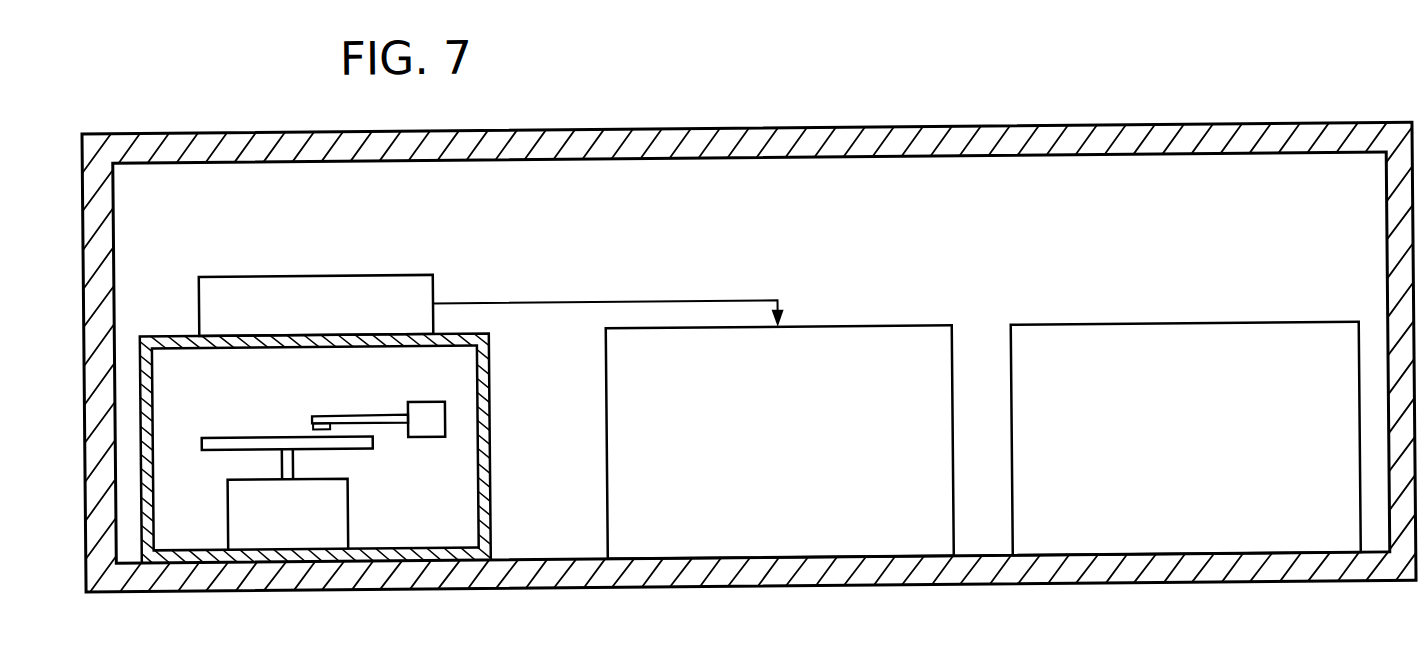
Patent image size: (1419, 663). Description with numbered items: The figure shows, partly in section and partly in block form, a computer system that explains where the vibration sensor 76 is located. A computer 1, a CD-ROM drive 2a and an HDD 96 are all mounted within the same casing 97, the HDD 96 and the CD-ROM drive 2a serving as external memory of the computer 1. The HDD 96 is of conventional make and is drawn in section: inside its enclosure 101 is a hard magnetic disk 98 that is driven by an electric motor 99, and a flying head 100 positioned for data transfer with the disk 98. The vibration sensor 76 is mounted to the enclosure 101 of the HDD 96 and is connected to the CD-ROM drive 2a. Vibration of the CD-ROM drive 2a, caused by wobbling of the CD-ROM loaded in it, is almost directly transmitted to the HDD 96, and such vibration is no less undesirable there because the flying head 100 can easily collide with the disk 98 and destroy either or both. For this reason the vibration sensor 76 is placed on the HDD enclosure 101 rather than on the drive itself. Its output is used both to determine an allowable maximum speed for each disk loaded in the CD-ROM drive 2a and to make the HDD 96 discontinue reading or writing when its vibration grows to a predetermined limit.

The computer 1 is at (1140, 333).
The CD-ROM drive 2a is at (861, 333).
The vibration sensor 76 is at (302, 278).
The HDD 96 is at (492, 422).
The casing 97 is at (537, 594).
The hard magnetic disk 98 is at (224, 438).
The electric motor 99 is at (346, 506).
The flying head 100 is at (310, 428).
The enclosure 101 is at (488, 492).